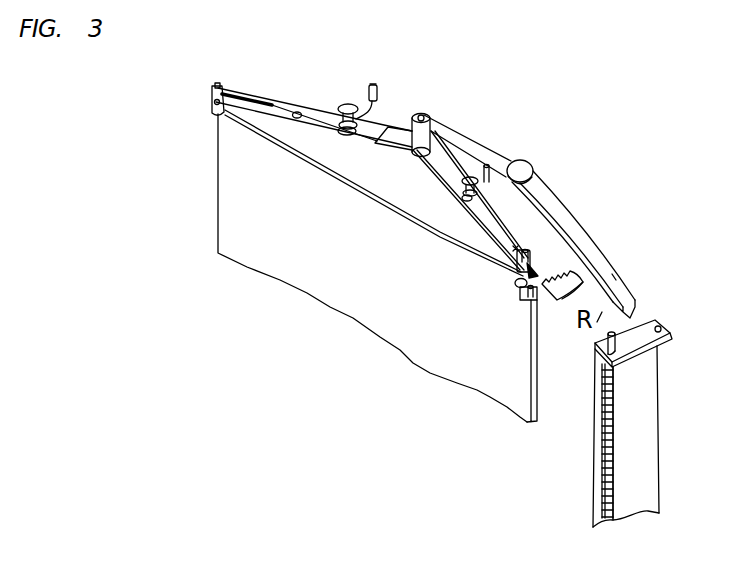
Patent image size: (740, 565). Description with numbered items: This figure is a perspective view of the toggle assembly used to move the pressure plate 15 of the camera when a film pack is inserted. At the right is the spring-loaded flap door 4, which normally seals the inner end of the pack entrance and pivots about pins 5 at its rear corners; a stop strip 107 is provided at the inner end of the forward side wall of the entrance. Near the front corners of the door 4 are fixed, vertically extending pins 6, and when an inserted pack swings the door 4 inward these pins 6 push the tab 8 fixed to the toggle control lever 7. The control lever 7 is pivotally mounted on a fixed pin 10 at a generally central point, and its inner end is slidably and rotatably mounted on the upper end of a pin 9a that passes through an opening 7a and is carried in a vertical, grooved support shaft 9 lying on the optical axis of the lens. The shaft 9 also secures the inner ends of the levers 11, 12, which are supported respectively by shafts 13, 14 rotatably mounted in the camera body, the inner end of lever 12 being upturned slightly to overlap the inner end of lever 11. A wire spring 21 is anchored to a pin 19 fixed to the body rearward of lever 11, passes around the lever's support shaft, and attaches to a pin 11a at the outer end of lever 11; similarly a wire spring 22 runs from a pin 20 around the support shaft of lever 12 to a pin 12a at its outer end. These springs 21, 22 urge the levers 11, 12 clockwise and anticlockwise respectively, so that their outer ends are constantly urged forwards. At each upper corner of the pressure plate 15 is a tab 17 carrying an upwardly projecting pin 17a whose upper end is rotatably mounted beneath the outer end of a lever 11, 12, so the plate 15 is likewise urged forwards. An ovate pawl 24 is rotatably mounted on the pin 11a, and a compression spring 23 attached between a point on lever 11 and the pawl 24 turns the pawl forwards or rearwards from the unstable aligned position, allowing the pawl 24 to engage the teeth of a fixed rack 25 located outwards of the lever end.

The flap door 4 is at (645, 398).
The pins 5 is at (670, 339).
The pins 6 is at (661, 326).
The toggle control lever 7 is at (567, 213).
The opening 7a is at (428, 120).
The tab 8 is at (636, 301).
The grooved support shaft 9 is at (422, 115).
The pin 9a is at (390, 98).
The fixed pin 10 is at (526, 166).
The lever 11 is at (453, 231).
The pin 11a is at (523, 250).
The lever 12 is at (357, 141).
The pin 12a is at (217, 83).
The shaft 13 is at (462, 183).
The shaft 14 is at (347, 106).
The pressure plate 15 is at (360, 303).
The tab 17 is at (213, 113).
The pin 17a is at (213, 101).
The pin 19 is at (486, 164).
The pin 20 is at (376, 85).
The wire spring 21 is at (493, 232).
The wire spring 22 is at (302, 112).
The compression spring 23 is at (516, 273).
The ovate pawl 24 is at (524, 293).
The fixed rack 25 is at (559, 292).
The stop strip 107 is at (604, 477).